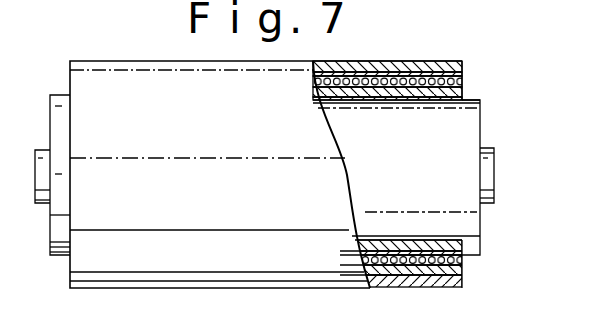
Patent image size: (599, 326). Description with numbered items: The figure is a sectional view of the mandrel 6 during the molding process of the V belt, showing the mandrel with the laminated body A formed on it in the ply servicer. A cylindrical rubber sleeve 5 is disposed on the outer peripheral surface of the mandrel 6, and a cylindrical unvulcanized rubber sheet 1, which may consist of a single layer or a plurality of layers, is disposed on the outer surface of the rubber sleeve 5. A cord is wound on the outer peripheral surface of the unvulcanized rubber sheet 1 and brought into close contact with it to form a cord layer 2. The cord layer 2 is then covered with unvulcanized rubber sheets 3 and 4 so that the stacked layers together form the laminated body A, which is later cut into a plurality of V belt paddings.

The unvulcanized rubber sheet 1 is at (417, 187).
The cord layer 2 is at (463, 80).
The unvulcanized rubber sheet 3 is at (463, 72).
The unvulcanized rubber sheet 4 is at (463, 60).
The rubber sleeve 5 is at (433, 107).
The mandrel 6 is at (472, 236).
The laminated body A is at (433, 145).